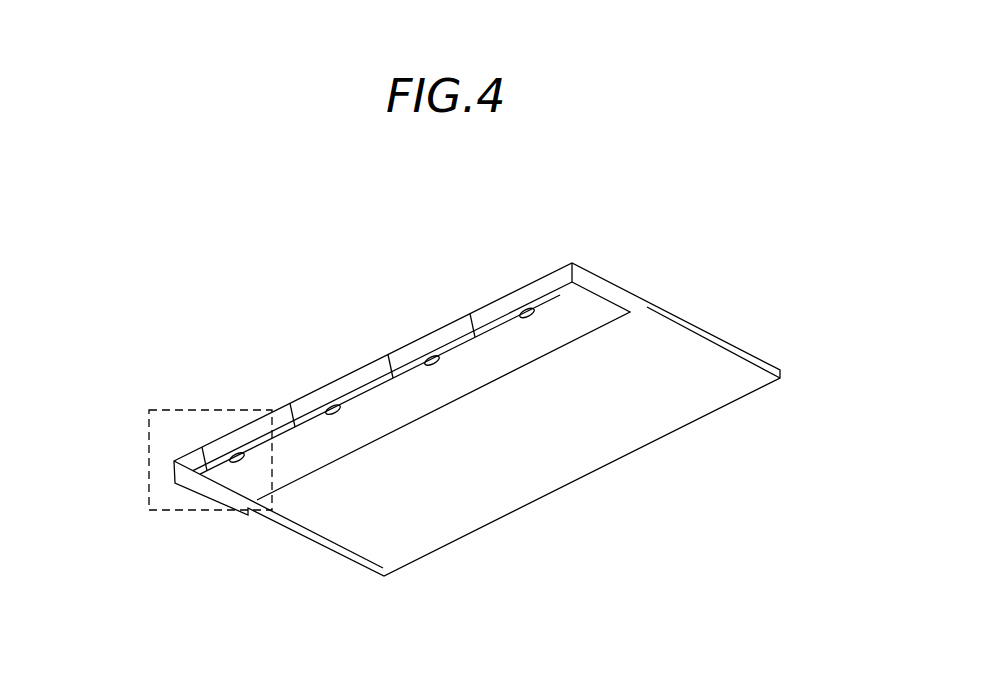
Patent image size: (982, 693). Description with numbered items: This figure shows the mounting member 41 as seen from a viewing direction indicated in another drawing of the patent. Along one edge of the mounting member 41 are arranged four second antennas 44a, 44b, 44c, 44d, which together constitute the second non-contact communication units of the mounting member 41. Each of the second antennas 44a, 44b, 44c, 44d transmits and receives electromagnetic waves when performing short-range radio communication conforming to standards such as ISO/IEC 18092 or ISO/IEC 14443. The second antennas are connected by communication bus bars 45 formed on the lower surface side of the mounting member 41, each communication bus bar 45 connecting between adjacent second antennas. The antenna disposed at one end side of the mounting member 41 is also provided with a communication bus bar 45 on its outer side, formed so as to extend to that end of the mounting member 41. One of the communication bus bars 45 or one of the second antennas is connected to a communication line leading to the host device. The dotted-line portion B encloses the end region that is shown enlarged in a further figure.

The mounting member 41 is at (345, 557).
The second antenna 44a is at (527, 310).
The second antenna 44b is at (432, 357).
The second antenna 44c is at (333, 406).
The second antenna 44d is at (237, 454).
The communication bus bar 45 is at (202, 447).
The portion B is at (152, 407).